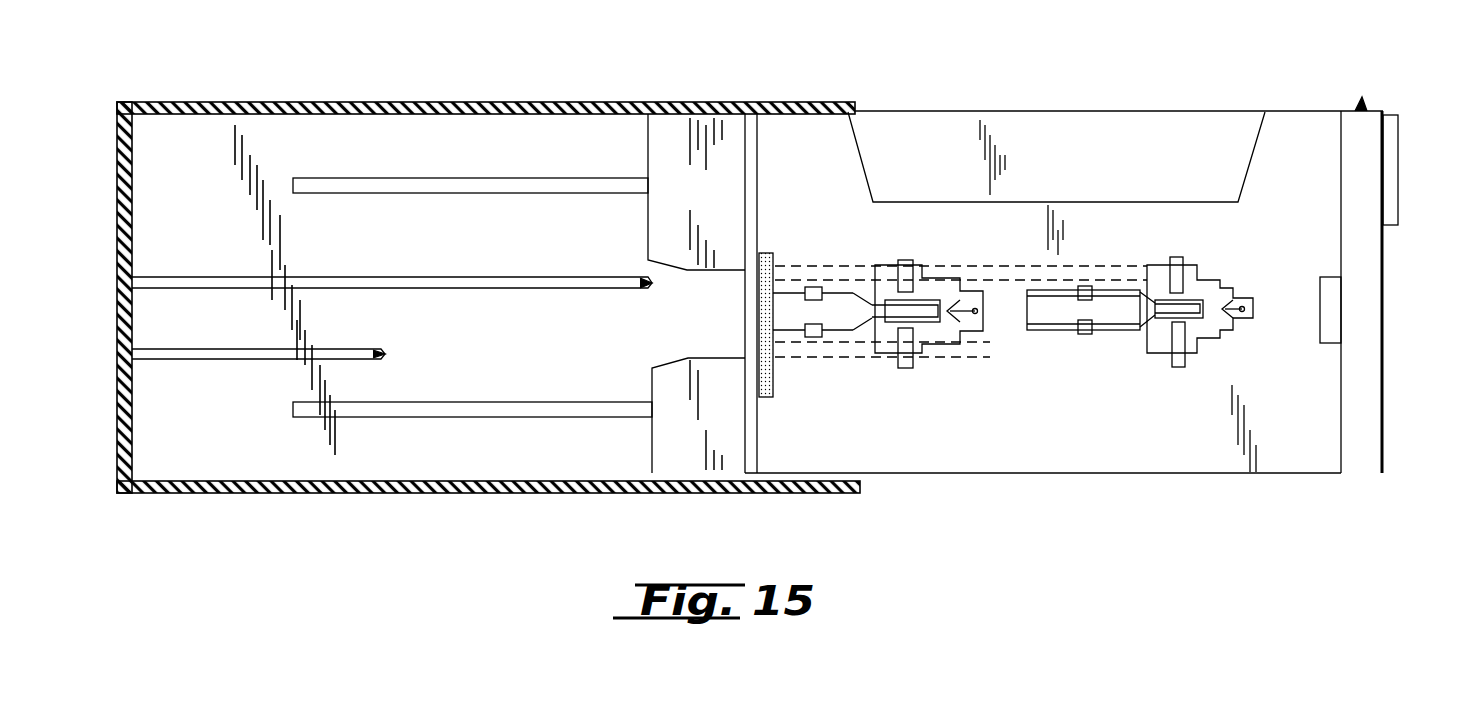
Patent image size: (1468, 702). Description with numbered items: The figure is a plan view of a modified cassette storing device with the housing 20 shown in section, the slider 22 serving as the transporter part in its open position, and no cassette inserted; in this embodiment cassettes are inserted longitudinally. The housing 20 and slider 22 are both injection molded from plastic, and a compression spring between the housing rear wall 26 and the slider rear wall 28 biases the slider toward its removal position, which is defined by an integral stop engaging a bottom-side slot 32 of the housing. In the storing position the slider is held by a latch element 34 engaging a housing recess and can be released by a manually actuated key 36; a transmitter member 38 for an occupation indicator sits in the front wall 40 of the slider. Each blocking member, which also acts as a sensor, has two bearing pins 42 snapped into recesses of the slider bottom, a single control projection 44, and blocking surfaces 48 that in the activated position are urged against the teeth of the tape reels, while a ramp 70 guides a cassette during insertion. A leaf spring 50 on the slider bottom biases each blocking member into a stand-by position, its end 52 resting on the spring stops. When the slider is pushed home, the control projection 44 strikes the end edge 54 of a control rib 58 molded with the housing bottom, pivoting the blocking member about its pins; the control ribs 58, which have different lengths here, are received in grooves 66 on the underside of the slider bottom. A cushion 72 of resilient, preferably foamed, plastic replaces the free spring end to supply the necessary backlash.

The housing 20 is at (488, 100).
The slider 22 is at (1188, 111).
The housing rear wall 26 is at (117, 221).
The slider rear wall 28 is at (748, 152).
The bottom-side slot 32 is at (445, 193).
The latch element 34 is at (1360, 100).
The key 36 is at (1392, 157).
The transmitter member 38 is at (1328, 298).
The front wall 40 is at (1367, 310).
The bearing pins 42 is at (906, 266).
The control projection 44 is at (893, 345).
The blocking surfaces 48 is at (945, 340).
The leaf spring 50 is at (838, 290).
The leaf spring end 52 is at (886, 315).
The end edge 54 is at (654, 283).
The control rib 58 is at (385, 277).
The grooves 66 is at (1020, 265).
The ramp 70 is at (977, 316).
The cushion 72 is at (775, 382).